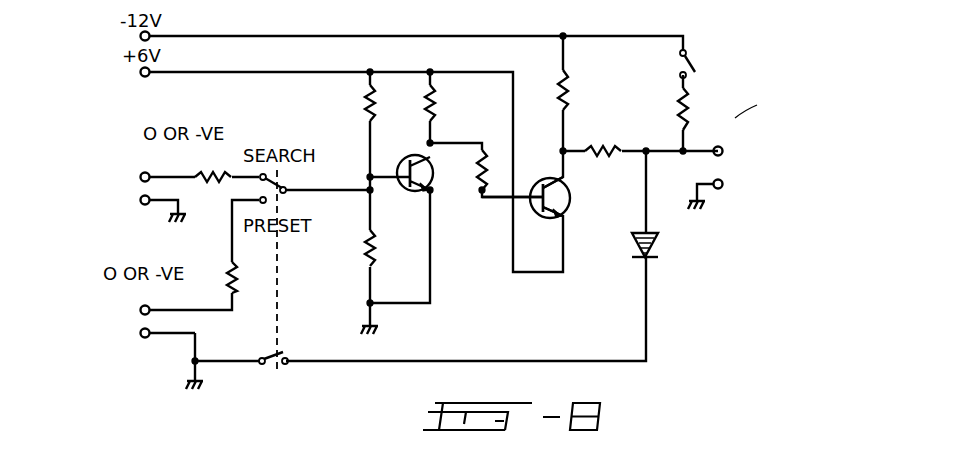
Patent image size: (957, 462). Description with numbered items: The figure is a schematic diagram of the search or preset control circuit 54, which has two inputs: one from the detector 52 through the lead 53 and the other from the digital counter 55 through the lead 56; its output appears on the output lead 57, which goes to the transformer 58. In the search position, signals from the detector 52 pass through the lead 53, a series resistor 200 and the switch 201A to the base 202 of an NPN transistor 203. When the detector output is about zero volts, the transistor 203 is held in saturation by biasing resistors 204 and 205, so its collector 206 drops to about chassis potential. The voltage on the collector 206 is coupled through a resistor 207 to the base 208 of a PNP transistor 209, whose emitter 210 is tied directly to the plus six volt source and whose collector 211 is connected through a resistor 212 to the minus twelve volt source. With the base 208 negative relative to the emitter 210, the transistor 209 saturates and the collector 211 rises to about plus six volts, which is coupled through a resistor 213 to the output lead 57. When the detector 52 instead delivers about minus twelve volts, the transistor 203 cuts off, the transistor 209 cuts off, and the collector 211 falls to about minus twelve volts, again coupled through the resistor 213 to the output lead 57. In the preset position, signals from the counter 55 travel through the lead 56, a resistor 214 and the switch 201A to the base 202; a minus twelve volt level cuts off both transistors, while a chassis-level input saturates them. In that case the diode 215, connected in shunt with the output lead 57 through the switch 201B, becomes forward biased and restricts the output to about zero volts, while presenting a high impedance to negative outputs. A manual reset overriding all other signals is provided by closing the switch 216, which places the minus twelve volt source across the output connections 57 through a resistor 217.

The detector 52 is at (81, 193).
The lead 53 is at (147, 172).
The search or preset control circuit 54 is at (745, 361).
The digital counter 55 is at (83, 332).
The lead 56 is at (142, 306).
The output lead 57 is at (719, 146).
The transformer (TFMR) 58 is at (766, 151).
The series resistor 200 is at (224, 173).
The switch 201A is at (281, 185).
The switch 201B is at (264, 371).
The base 202 is at (402, 165).
The NPN transistor 203 is at (406, 190).
The biasing resistor 204 is at (376, 249).
The biasing resistor 205 is at (366, 118).
The collector 206 is at (431, 166).
The resistor 207 is at (480, 183).
The base 208 is at (541, 187).
The PNP transistor 209 is at (568, 208).
The emitter 210 is at (548, 218).
The collector 211 is at (566, 177).
The resistor 212 is at (569, 99).
The resistor 213 is at (595, 147).
The resistor 214 is at (229, 264).
The diode 215 is at (659, 246).
The switch 216 is at (689, 63).
The resistor 217 is at (689, 106).